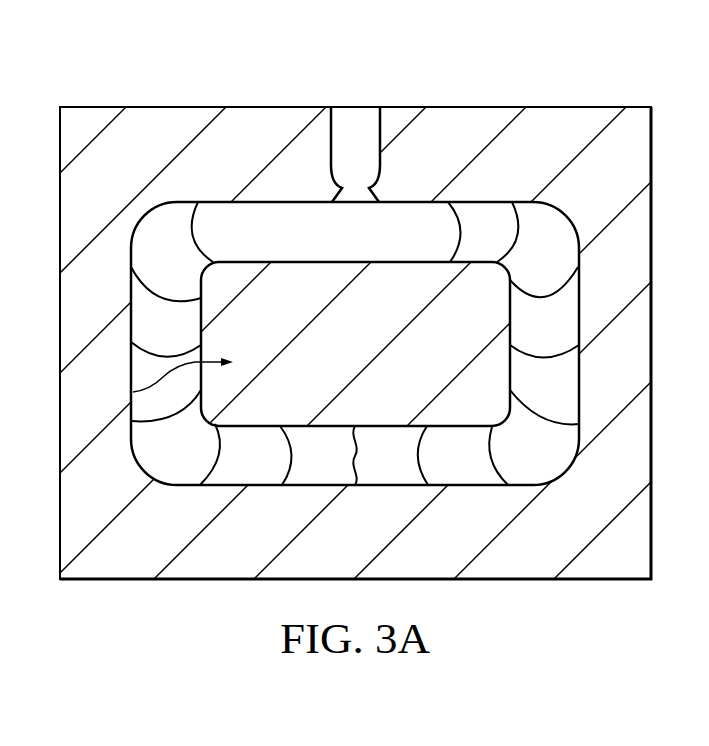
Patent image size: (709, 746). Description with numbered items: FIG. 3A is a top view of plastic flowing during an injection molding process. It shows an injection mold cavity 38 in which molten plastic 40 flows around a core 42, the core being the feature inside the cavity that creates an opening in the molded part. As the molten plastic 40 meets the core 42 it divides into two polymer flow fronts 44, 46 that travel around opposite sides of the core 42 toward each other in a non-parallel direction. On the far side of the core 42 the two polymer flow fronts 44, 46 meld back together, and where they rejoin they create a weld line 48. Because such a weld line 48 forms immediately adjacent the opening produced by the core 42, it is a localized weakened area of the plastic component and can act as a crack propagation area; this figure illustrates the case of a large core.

The injection mold cavity 38 is at (558, 126).
The molten plastic 40 is at (406, 215).
The core 42 is at (133, 392).
The polymer flow front 44 is at (218, 467).
The polymer flow front 46 is at (493, 466).
The weld line 48 is at (351, 500).